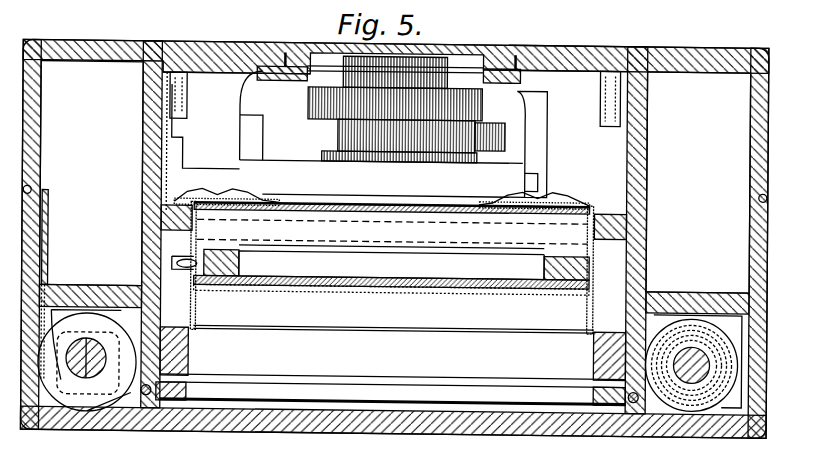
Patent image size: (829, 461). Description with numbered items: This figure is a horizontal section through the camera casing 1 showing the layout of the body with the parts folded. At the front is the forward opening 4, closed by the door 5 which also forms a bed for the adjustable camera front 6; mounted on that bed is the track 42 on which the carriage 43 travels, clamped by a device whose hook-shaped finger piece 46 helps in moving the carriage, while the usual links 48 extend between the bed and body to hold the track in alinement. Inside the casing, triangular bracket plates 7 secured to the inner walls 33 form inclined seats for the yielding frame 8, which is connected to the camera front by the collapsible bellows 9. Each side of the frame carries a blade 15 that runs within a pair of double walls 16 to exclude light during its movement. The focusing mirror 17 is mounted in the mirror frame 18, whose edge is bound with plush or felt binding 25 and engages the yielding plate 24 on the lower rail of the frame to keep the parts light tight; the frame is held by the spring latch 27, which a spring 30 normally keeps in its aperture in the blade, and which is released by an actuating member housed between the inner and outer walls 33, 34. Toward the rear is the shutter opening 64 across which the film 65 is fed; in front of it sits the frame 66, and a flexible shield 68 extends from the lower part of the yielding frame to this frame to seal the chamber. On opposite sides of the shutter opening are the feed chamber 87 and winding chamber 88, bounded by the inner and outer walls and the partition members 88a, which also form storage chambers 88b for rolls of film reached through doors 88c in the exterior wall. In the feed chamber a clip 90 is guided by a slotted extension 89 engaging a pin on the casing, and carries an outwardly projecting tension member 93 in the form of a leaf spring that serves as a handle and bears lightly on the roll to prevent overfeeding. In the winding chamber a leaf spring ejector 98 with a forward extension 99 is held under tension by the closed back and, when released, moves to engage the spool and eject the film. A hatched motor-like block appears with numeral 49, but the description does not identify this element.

The box or casing 1 is at (405, 239).
The forward opening 4 is at (603, 1).
The door 5 is at (565, 9).
The adjustable camera front 6 is at (393, 134).
The triangular bracket plates 7 is at (393, 433).
The yielding frame 8 is at (610, 239).
The collapsible bellows 9 is at (199, 148).
The blade 15 is at (391, 366).
The double walls 16 is at (174, 270).
The mirror 17 is at (357, 183).
The mirror frame 18 is at (207, 216).
The yielding plate 24 is at (392, 226).
The yielding binding 25 is at (392, 269).
The spring latch 27 is at (377, 273).
The spring 30 is at (135, 196).
The inner walls 33 is at (130, 64).
The outer wall 34 is at (392, 309).
The track or way 42 is at (389, 86).
The carriage 43 is at (385, 109).
The finger piece 46 is at (499, 135).
The links 48 is at (156, 76).
The armature 49 is at (395, 104).
The shutter or exposure opening 64 is at (259, 334).
The film 65 is at (293, 359).
The frame 66 is at (433, 352).
The flexible shield 68 is at (393, 313).
The feed chamber 87 is at (117, 349).
The winding chamber 88 is at (630, 424).
The partition members 88a is at (76, 258).
The storage chamber 88b is at (395, 195).
The doors 88c is at (393, 176).
The slotted extension 89 is at (26, 177).
The clip 90 is at (59, 263).
The tension member 93 is at (30, 358).
The leaf spring ejector 98 is at (674, 268).
The forward extension 99 is at (726, 362).